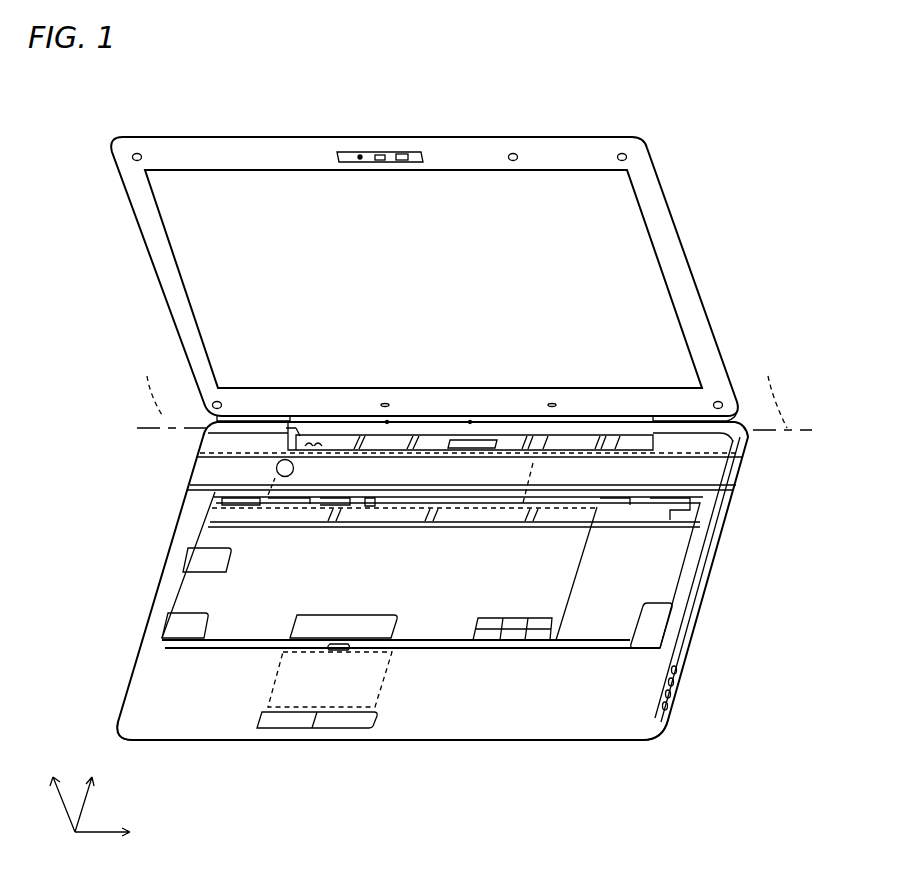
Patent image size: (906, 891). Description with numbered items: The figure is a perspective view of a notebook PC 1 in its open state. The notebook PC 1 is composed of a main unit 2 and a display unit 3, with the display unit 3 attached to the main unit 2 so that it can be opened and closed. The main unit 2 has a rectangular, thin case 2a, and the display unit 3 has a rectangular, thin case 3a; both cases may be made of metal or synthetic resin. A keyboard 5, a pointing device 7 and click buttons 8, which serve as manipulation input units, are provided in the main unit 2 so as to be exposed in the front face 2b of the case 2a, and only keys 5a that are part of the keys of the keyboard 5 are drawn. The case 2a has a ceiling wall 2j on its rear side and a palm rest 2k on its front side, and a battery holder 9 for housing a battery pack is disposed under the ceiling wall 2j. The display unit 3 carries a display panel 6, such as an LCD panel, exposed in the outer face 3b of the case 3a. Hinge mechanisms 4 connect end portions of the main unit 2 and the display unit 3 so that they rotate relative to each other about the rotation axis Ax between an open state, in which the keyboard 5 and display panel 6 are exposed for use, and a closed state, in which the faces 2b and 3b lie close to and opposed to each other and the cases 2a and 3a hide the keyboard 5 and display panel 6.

The notebook PC 1 is at (693, 124).
The main unit 2 is at (160, 573).
The case 2a is at (690, 640).
The front face 2b is at (150, 665).
The ceiling wall 2j is at (720, 468).
The palm rest 2k is at (144, 712).
The display unit 3 is at (130, 205).
The case 3a is at (423, 279).
The face 3b is at (665, 233).
The hinge mechanisms 4 is at (298, 434).
The keyboard 5 is at (188, 550).
The keys 5a is at (477, 643).
The display panel 6 is at (447, 170).
The pointing device 7 is at (278, 660).
The click buttons 8 is at (271, 730).
The battery holder 9 is at (533, 463).